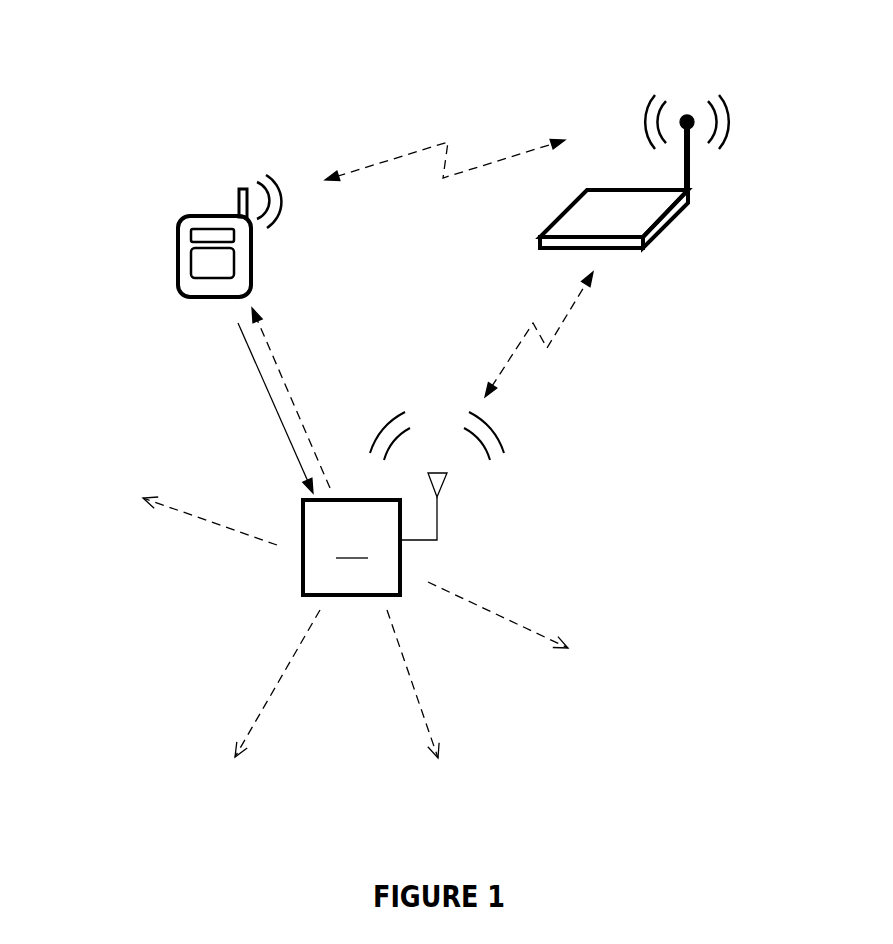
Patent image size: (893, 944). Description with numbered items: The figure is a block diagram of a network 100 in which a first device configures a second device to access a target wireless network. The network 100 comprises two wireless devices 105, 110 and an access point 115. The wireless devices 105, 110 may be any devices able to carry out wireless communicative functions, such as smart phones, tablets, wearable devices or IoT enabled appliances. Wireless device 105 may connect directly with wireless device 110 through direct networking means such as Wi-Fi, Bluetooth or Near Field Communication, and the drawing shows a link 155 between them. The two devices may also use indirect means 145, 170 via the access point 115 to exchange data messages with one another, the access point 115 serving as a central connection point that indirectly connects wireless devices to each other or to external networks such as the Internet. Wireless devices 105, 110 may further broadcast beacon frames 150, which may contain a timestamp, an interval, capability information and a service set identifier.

The network 100 is at (112, 50).
The wireless device 105 is at (172, 205).
The wireless device 110 is at (403, 503).
The access point 115 is at (677, 240).
The indirect means 145 is at (445, 147).
The beacon frames 150 is at (355, 533).
The signal from mobile device to base station 155 is at (271, 408).
The wireless link between router and base station 170 is at (539, 334).